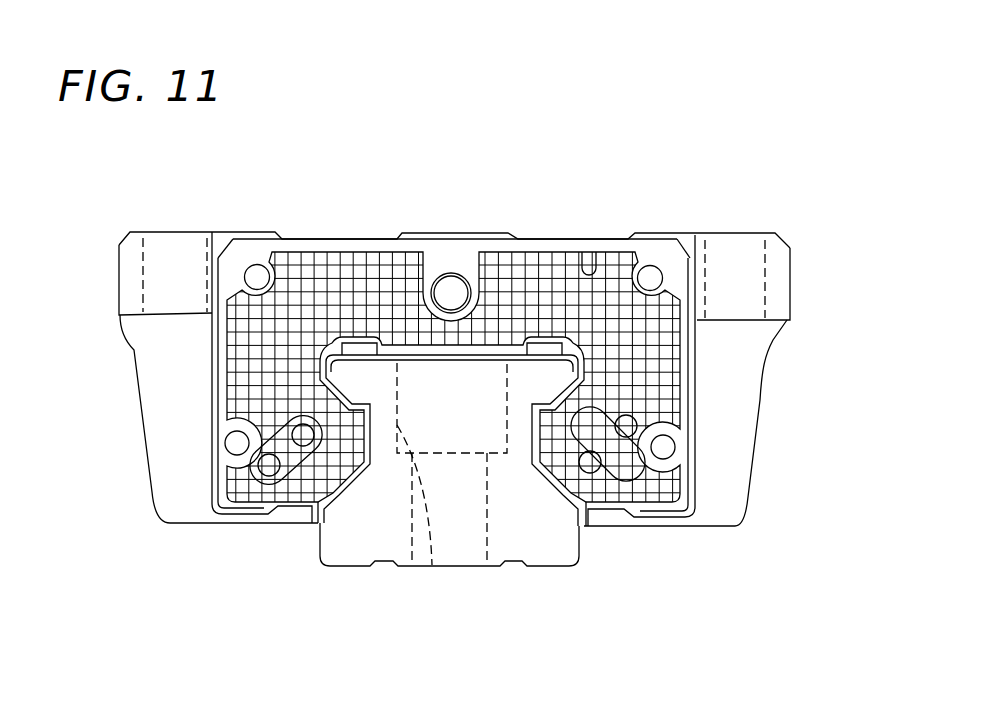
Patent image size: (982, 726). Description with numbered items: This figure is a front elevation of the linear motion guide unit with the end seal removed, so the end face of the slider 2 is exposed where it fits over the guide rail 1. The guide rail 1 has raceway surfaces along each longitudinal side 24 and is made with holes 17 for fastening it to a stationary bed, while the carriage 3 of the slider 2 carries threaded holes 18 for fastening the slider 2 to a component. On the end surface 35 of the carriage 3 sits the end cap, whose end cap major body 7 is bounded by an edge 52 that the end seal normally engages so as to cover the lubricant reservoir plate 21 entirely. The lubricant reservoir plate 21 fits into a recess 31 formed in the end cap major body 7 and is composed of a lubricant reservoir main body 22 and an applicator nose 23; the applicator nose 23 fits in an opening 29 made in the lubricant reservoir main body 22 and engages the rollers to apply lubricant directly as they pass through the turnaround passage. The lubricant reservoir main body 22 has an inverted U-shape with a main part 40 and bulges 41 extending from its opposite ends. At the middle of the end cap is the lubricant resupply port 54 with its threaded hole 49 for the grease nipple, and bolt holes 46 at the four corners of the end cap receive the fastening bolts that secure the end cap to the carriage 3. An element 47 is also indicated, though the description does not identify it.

The guide rail 1 is at (517, 540).
The slider 2 is at (517, 236).
The carriage 3 is at (172, 303).
The end cap major body 7 is at (421, 238).
The holes 17 is at (432, 565).
The threaded holes 18 is at (207, 262).
The lubricant reservoir plate 21 is at (327, 287).
The lubricant reservoir main body 22 is at (371, 297).
The applicator nose 23 is at (296, 445).
The longitudinal side 24 is at (320, 543).
The opening 29 is at (298, 462).
The recess 31 is at (240, 340).
The end surface 35 is at (215, 353).
The main part 40 is at (538, 287).
The bulges 41 is at (253, 377).
The bolt holes 46 is at (655, 277).
The outer side edge 47 is at (218, 408).
The threaded hole 49 is at (450, 284).
The edge 52 is at (347, 245).
The lubricant resupply port 54 is at (458, 287).